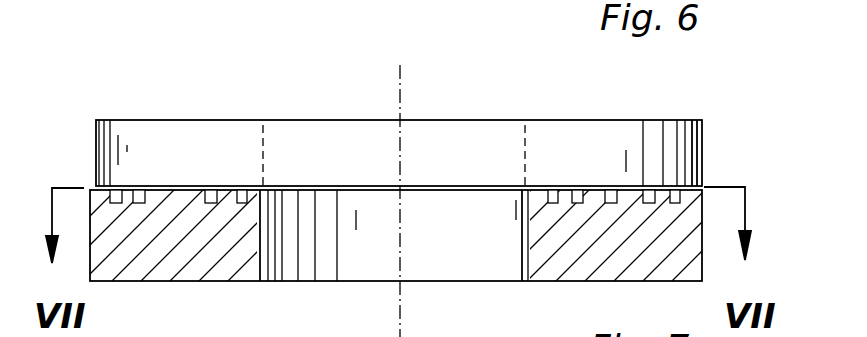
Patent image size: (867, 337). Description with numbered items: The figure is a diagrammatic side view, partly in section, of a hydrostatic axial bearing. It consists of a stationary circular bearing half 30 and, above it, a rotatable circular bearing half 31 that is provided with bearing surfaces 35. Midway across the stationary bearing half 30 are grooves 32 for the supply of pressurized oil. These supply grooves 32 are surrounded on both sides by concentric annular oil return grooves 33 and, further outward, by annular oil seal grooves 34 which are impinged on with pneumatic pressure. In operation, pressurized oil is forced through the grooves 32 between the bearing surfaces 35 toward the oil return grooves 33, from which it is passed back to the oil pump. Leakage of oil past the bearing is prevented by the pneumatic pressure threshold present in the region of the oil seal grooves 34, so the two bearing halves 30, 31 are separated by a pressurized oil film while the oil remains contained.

The stationary circular bearing half 30 is at (551, 258).
The rotatable circular bearing half 31 is at (200, 140).
The grooves for the supply of pressurized oil 32 is at (182, 200).
The concentric annular oil return grooves 33 is at (142, 188).
The annular oil seal grooves 34 is at (115, 188).
The bearing surfaces 35 is at (545, 187).